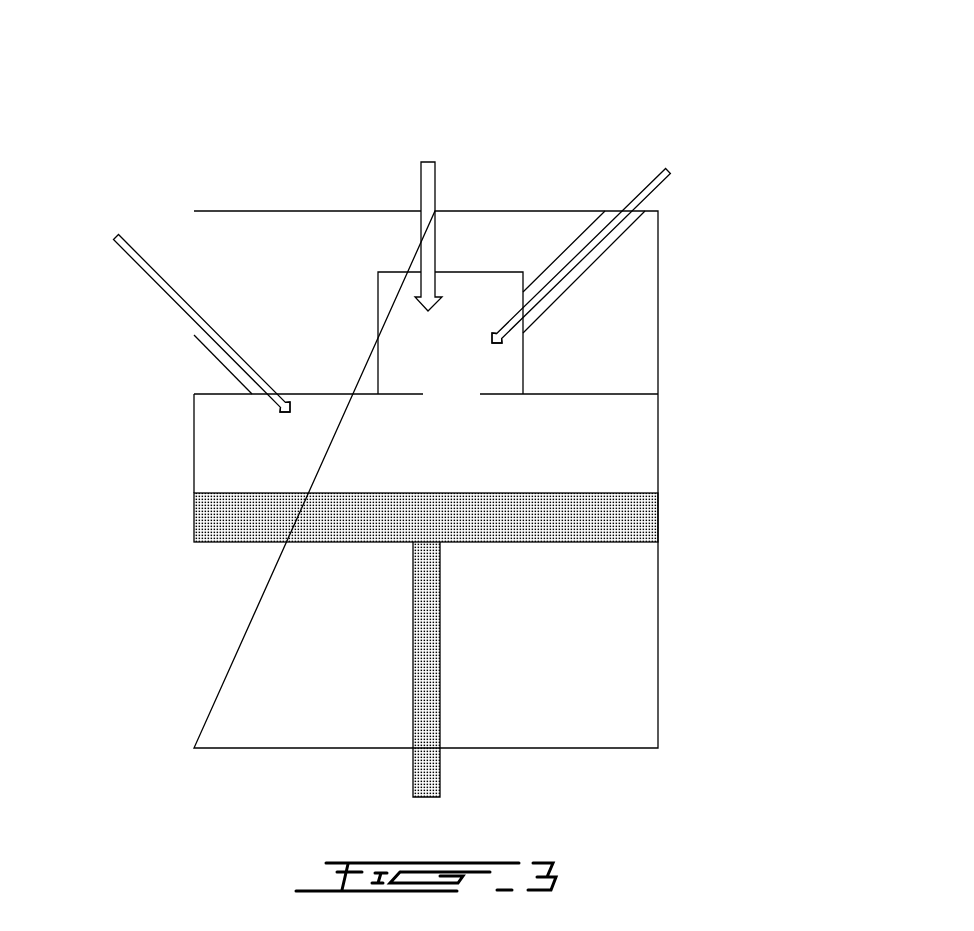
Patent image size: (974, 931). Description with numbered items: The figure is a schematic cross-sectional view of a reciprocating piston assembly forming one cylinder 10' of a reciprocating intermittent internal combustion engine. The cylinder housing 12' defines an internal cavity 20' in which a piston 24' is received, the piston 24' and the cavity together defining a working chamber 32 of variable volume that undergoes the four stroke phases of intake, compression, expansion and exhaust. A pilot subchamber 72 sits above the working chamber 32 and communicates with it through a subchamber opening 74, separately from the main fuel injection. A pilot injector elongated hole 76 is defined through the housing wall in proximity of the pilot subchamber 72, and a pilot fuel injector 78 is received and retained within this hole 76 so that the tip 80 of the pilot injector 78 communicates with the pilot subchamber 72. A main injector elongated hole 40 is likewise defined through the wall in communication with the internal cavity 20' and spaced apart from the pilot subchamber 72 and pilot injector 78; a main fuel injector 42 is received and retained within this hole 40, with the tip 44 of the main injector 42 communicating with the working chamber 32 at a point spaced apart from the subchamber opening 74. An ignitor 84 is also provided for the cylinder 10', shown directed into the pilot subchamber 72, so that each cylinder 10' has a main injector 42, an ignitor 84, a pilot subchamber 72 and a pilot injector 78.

The cylinder 10' is at (846, 81).
The cylinder housing 12' is at (521, 468).
The internal cavity 20' is at (504, 429).
The piston 24' is at (500, 645).
The working chamber 32 is at (367, 461).
The main injector elongated hole 40 is at (223, 330).
The main fuel injector 42 is at (131, 260).
The tip of the main injector 44 is at (272, 405).
The pilot subchamber 72 is at (430, 350).
The subchamber opening 74 is at (451, 398).
The pilot injector elongated hole 76 is at (578, 238).
The pilot fuel injector 78 is at (638, 190).
The tip of the pilot injector 80 is at (503, 330).
The ignitor 84 is at (421, 172).